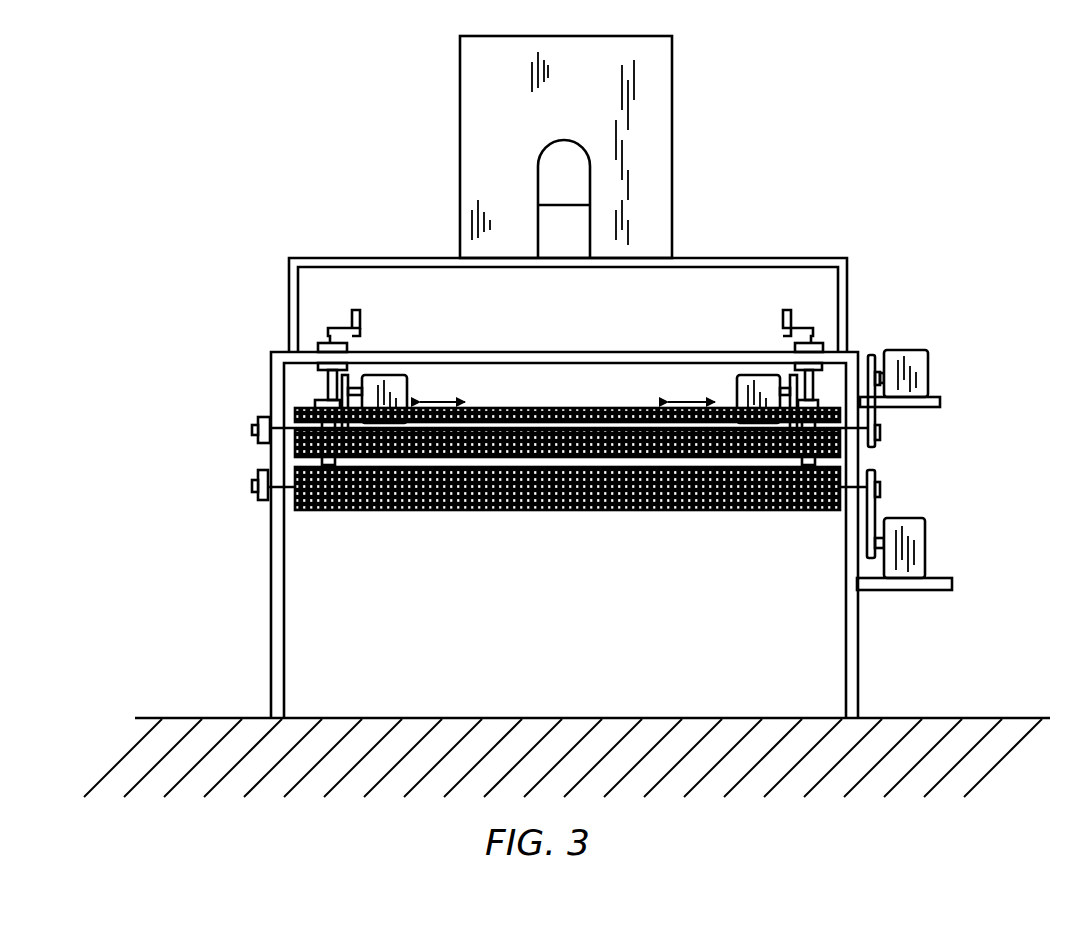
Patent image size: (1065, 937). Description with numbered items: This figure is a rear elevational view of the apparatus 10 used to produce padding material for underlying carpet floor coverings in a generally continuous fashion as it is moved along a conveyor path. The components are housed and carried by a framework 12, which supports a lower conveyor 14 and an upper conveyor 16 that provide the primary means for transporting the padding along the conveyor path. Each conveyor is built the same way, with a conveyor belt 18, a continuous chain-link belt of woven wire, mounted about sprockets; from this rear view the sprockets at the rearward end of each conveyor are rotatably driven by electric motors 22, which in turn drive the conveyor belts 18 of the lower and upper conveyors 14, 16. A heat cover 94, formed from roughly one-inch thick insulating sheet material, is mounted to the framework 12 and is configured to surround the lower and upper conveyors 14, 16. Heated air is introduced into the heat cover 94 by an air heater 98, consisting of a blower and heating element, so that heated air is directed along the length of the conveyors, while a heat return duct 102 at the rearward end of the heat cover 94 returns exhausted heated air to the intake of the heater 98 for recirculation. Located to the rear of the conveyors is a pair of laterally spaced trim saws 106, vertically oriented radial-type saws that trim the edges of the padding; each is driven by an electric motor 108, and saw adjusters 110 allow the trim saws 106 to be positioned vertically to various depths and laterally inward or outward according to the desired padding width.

The apparatus 10 is at (858, 139).
The framework 12 is at (272, 384).
The lower conveyor 14 is at (615, 512).
The upper conveyor 16 is at (598, 404).
The conveyor belt 18 is at (518, 509).
The electric motors 22 is at (925, 375).
The heat cover 94 is at (727, 257).
The air heater 98 is at (655, 77).
The heat return duct 102 is at (575, 170).
The trim saws 106 is at (812, 390).
The electric motor 108 is at (753, 375).
The saw adjusters 110 is at (814, 343).